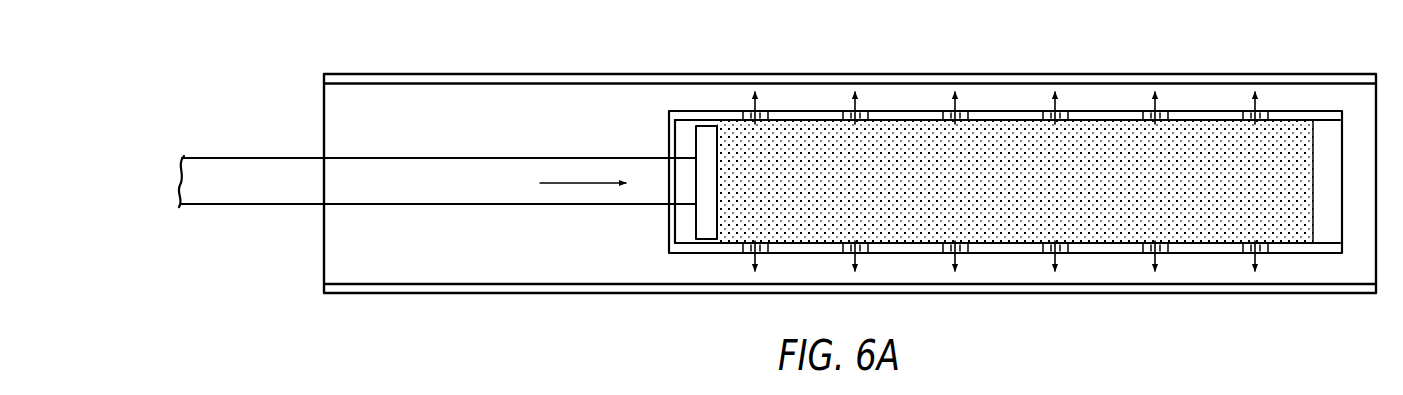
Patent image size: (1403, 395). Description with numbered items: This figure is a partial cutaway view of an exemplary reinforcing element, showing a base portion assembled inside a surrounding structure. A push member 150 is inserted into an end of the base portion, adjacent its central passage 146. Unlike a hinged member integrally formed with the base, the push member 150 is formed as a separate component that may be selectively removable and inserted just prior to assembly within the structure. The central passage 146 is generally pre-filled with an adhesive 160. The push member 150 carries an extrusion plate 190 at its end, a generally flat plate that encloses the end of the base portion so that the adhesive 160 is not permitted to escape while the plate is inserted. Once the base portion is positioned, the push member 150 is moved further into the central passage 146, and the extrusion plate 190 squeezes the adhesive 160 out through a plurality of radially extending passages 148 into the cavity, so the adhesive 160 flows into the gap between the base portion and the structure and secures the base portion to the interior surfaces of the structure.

The push member 150 is at (243, 165).
The adhesive 160 is at (982, 192).
The extrusion plate 190 is at (707, 133).
The radially extending passages 148 is at (1037, 117).
The central passage 146 is at (752, 214).